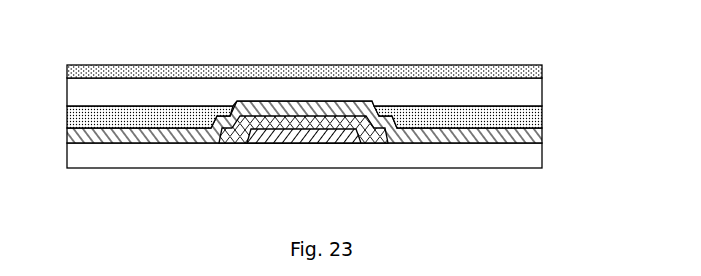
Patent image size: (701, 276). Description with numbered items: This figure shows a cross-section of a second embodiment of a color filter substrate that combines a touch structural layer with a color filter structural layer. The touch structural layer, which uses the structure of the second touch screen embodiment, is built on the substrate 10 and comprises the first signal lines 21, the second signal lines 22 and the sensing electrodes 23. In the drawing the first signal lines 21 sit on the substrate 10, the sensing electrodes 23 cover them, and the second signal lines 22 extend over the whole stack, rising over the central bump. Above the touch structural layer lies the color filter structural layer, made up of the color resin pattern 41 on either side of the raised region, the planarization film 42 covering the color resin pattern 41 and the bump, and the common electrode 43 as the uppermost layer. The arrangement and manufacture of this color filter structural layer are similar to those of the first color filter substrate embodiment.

The substrate 10 is at (180, 153).
The first signal lines 21 is at (323, 133).
The second signal lines 22 is at (445, 138).
The sensing electrodes 23 is at (302, 118).
The color resin pattern 41 is at (167, 118).
The planarization film 42 is at (446, 94).
The common electrode 43 is at (313, 70).